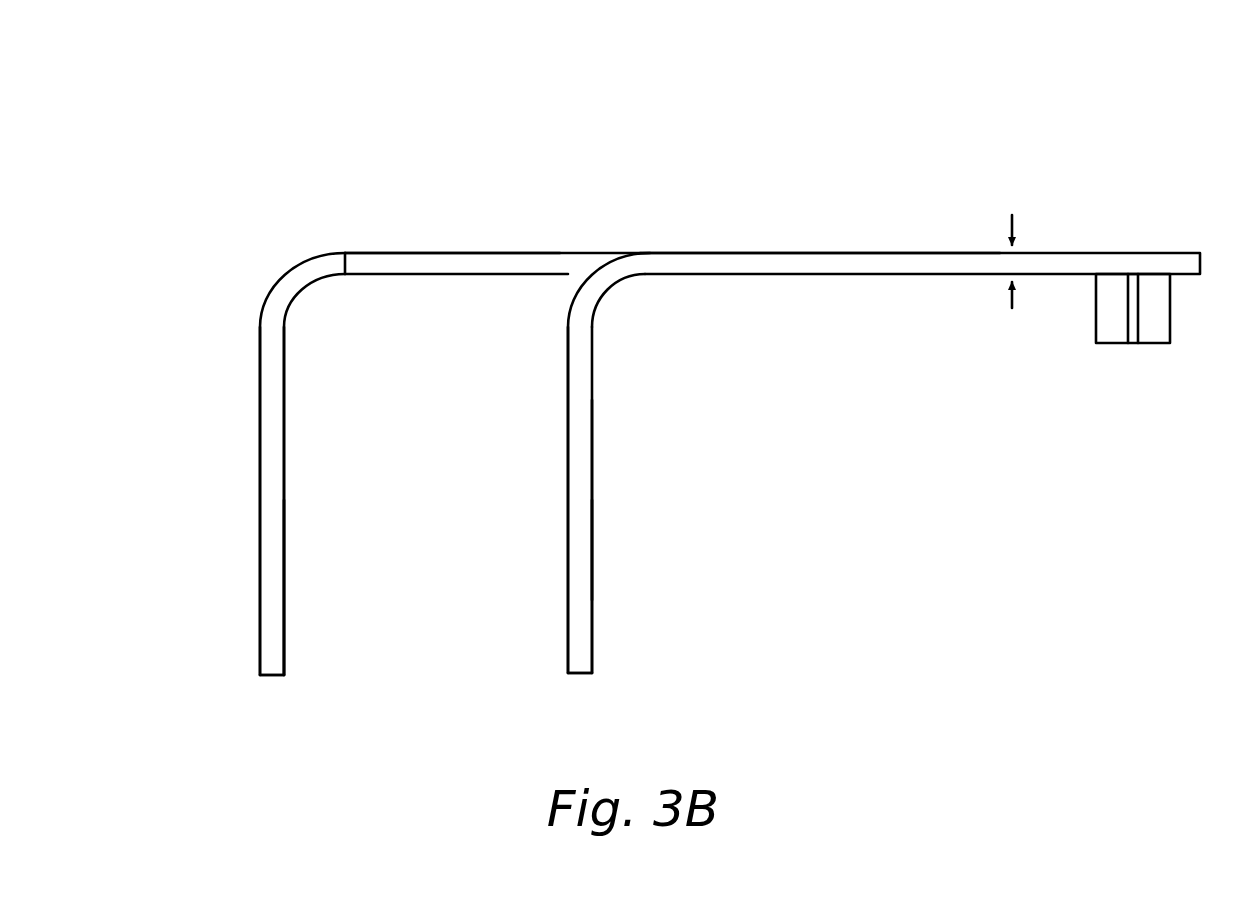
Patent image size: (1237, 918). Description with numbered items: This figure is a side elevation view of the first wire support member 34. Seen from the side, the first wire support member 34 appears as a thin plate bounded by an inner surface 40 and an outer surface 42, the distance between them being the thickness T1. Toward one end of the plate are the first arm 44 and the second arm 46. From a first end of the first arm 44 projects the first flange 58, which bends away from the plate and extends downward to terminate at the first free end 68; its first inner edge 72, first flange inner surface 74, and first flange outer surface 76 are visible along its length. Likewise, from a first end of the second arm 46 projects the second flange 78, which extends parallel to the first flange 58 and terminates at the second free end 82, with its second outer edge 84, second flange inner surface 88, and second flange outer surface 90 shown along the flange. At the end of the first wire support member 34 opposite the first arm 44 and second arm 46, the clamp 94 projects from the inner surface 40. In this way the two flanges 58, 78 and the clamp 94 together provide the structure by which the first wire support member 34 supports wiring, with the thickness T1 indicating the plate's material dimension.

The first wire support member 34 is at (665, 398).
The inner surface 40 is at (812, 276).
The outer surface 42 is at (867, 250).
The first arm 44 is at (430, 268).
The second arm 46 is at (658, 262).
The first flange 58 is at (250, 505).
The first free end 68 is at (270, 677).
The first inner edge 72 is at (270, 448).
The first flange inner surface 74 is at (287, 581).
The first flange outer surface 76 is at (258, 476).
The second flange 78 is at (581, 505).
The second free end 82 is at (575, 675).
The second outer edge 84 is at (578, 584).
The second flange inner surface 88 is at (595, 491).
The second flange outer surface 90 is at (565, 477).
The clamp 94 is at (1133, 345).
The thickness T1 is at (1010, 266).